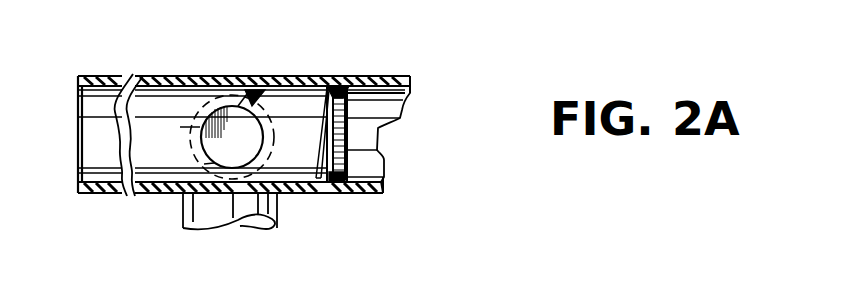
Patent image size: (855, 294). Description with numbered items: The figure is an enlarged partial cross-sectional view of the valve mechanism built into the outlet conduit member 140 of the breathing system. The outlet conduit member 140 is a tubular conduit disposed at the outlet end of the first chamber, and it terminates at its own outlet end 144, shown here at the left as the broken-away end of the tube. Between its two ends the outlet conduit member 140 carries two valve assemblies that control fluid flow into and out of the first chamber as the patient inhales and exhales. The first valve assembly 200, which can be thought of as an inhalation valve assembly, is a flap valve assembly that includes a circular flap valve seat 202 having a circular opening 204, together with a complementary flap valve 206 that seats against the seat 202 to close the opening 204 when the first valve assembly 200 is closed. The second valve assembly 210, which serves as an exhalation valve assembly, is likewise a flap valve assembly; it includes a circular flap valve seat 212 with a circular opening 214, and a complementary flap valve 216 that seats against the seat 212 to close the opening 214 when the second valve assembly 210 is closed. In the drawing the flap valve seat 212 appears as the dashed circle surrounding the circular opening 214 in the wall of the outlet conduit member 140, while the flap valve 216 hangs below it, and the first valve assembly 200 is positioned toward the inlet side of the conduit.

The outlet conduit member 140 is at (177, 84).
The outlet end 144 is at (78, 125).
The first valve assembly 200 is at (350, 90).
The circular flap valve seat 202 is at (352, 150).
The circular opening 204 is at (398, 112).
The flap valve 206 is at (316, 98).
The second valve assembly 210 is at (258, 95).
The circular flap valve seat 212 is at (222, 92).
The circular opening 214 is at (212, 146).
The flap valve 216 is at (218, 148).